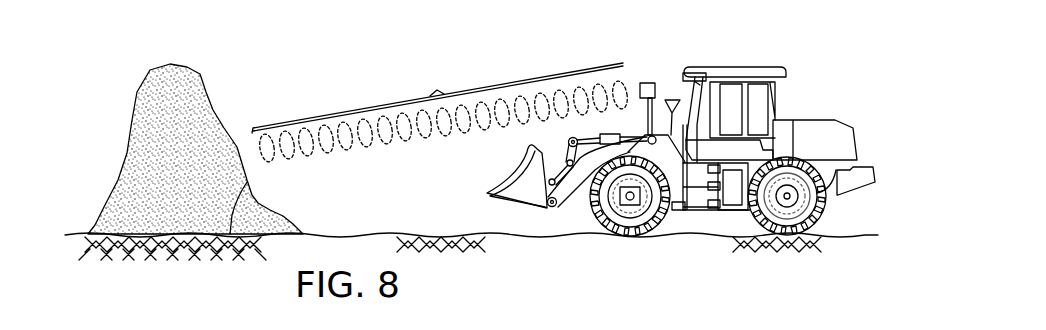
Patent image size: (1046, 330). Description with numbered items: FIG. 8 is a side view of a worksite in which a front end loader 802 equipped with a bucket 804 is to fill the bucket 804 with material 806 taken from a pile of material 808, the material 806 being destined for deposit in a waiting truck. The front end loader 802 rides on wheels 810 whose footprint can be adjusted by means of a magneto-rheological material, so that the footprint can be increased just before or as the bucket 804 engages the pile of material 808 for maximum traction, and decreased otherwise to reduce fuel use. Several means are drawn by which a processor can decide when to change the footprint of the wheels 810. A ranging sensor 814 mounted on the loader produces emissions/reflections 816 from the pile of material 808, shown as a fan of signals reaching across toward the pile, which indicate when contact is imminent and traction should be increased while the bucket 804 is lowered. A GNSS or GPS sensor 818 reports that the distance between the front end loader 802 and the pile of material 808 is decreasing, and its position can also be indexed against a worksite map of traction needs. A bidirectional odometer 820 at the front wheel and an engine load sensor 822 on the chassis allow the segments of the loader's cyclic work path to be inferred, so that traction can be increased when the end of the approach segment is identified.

The front end loader 802 is at (787, 99).
The bucket 804 is at (496, 177).
The material 806 is at (273, 216).
The pile of material 808 is at (150, 70).
The wheels 810 is at (668, 222).
The ranging sensor 814 is at (643, 83).
The emissions/reflections 816 is at (440, 112).
The GNSS or GPS sensor 818 is at (671, 100).
The bidirectional odometer 820 is at (620, 203).
The engine load sensor 822 is at (735, 206).